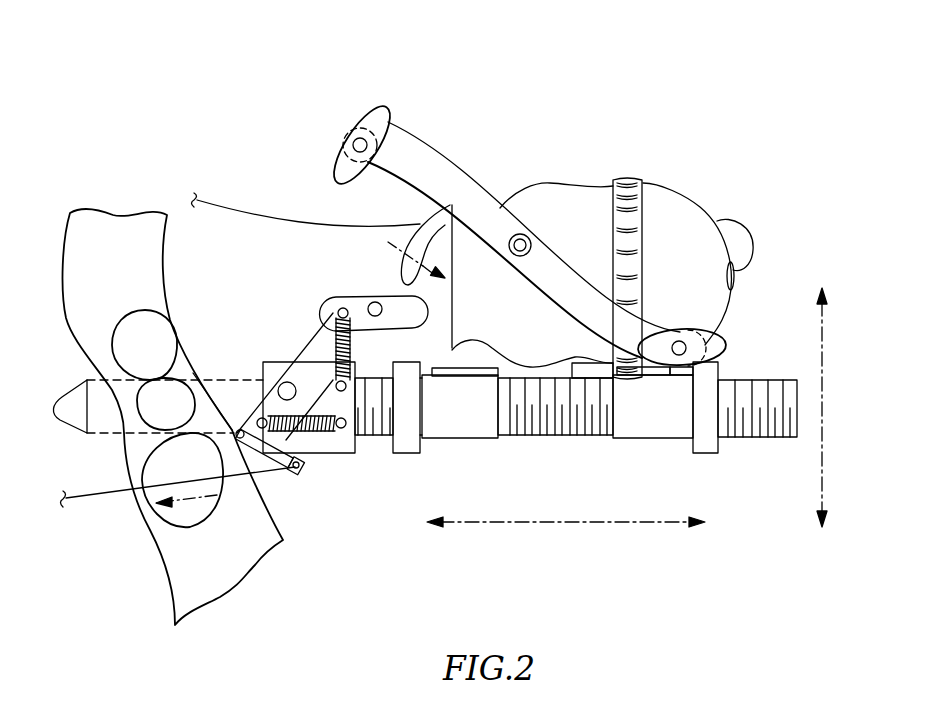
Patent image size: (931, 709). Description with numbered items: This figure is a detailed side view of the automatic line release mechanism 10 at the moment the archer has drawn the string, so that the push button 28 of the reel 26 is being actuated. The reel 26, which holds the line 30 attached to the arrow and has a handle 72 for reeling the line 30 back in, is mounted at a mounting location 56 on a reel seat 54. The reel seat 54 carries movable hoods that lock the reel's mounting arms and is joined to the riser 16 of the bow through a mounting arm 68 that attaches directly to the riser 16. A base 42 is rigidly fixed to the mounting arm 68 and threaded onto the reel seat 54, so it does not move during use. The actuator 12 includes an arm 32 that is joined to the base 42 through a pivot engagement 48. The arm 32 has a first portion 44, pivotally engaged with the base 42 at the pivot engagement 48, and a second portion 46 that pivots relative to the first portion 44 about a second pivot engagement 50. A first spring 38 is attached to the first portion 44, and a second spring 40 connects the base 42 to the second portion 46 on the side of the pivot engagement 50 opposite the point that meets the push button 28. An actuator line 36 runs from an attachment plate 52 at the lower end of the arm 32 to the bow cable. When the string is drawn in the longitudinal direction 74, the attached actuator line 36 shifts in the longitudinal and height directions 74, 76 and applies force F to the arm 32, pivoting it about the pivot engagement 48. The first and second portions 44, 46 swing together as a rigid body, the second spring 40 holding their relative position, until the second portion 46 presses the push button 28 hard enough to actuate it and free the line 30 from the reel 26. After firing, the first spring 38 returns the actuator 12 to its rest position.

The automatic line release mechanism 10 is at (214, 104).
The riser 16 is at (123, 259).
The mounting arm 68 is at (218, 388).
The actuator line 36 is at (112, 492).
The force F is at (205, 510).
The line 30 is at (240, 200).
The arm 32 is at (288, 373).
The pivot engagement 48 is at (278, 398).
The actuator 12 is at (308, 340).
The second portion 46 is at (346, 297).
The pivot engagement 50 is at (370, 302).
The second spring 40 is at (350, 347).
The first spring 38 is at (318, 432).
The attachment plate 52 is at (265, 456).
The first portion 44 is at (300, 470).
The base 42 is at (347, 453).
The reel seat 54 is at (372, 437).
The mounting location 56 is at (447, 427).
The handle 72 is at (404, 153).
The push button 28 is at (428, 218).
The reel 26 is at (546, 196).
The longitudinal direction 74 is at (537, 522).
The height direction 76 is at (813, 345).